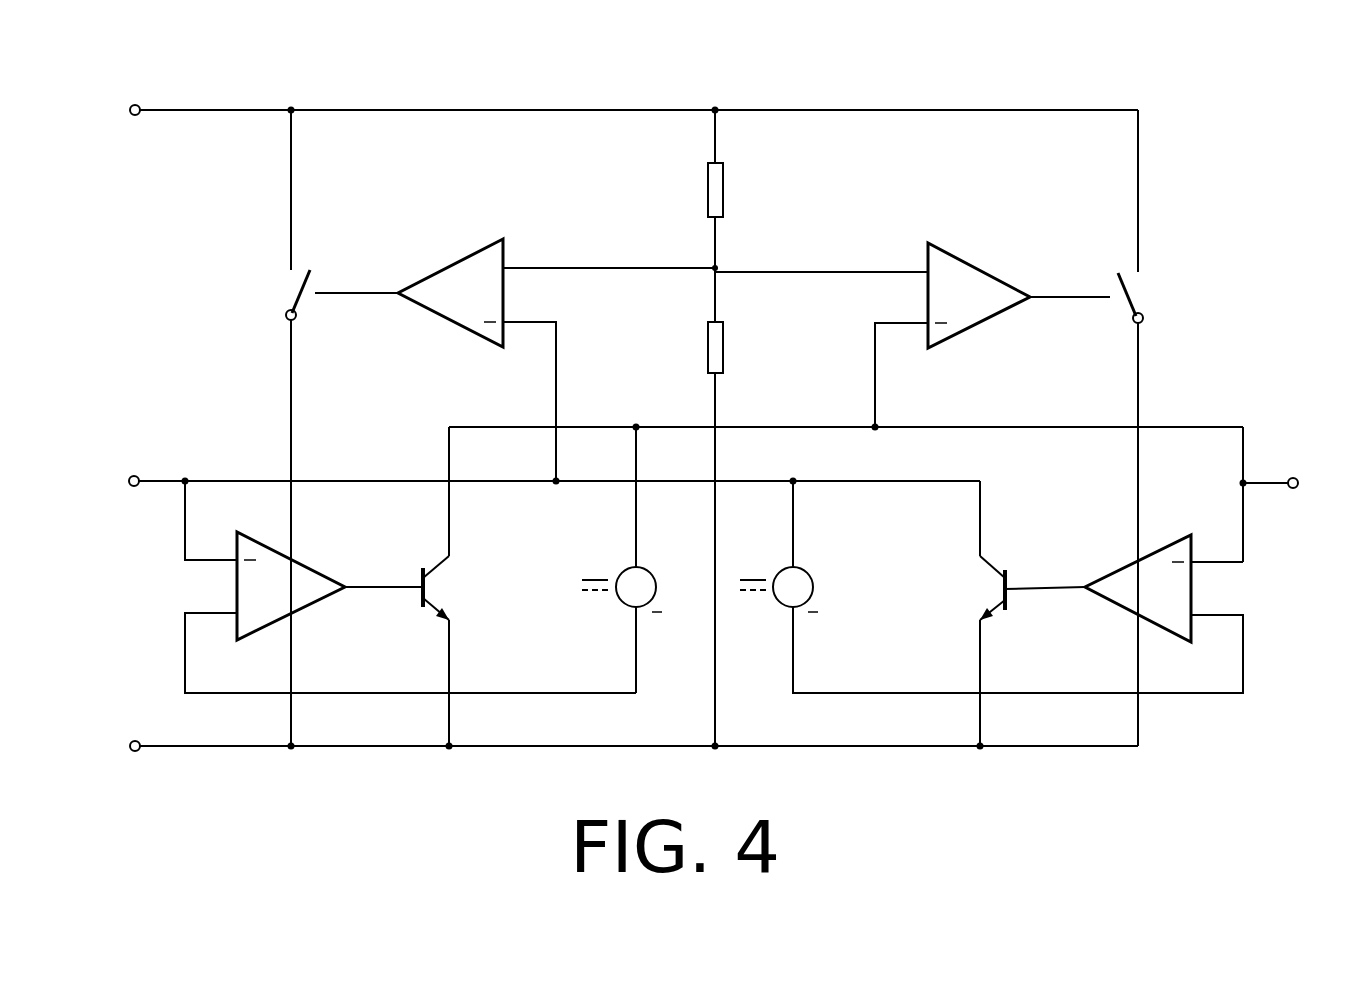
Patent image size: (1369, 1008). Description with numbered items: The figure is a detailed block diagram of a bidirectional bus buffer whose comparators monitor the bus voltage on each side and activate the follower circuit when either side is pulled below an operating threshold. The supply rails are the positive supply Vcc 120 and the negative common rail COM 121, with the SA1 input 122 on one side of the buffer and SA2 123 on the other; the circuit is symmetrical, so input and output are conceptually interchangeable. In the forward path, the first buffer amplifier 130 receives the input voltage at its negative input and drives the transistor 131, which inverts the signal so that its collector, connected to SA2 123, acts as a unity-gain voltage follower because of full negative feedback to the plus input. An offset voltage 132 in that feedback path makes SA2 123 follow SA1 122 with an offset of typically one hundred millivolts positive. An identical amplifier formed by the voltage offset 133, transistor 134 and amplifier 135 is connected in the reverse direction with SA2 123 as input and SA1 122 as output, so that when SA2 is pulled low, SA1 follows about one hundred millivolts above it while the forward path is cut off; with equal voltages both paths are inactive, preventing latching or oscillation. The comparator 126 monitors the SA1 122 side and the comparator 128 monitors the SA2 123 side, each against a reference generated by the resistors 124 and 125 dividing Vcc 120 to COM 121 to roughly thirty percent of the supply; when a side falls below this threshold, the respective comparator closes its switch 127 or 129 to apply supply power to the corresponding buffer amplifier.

The positive supply Vcc 120 is at (225, 98).
The common COM 121 is at (222, 752).
The SA1 input 122 is at (185, 465).
The SA2 output 123 is at (1252, 452).
The resistor 124 is at (728, 183).
The resistor 125 is at (728, 352).
The comparator 126 is at (505, 234).
The switch 127 is at (320, 262).
The comparator 128 is at (988, 268).
The switch 129 is at (1143, 282).
The first buffer amplifier 130 is at (332, 576).
The transistor 131 is at (440, 583).
The offset voltage 132 is at (616, 607).
The voltage offset 133 is at (820, 588).
The transistor 134 is at (1020, 612).
The amplifier 135 is at (1107, 545).